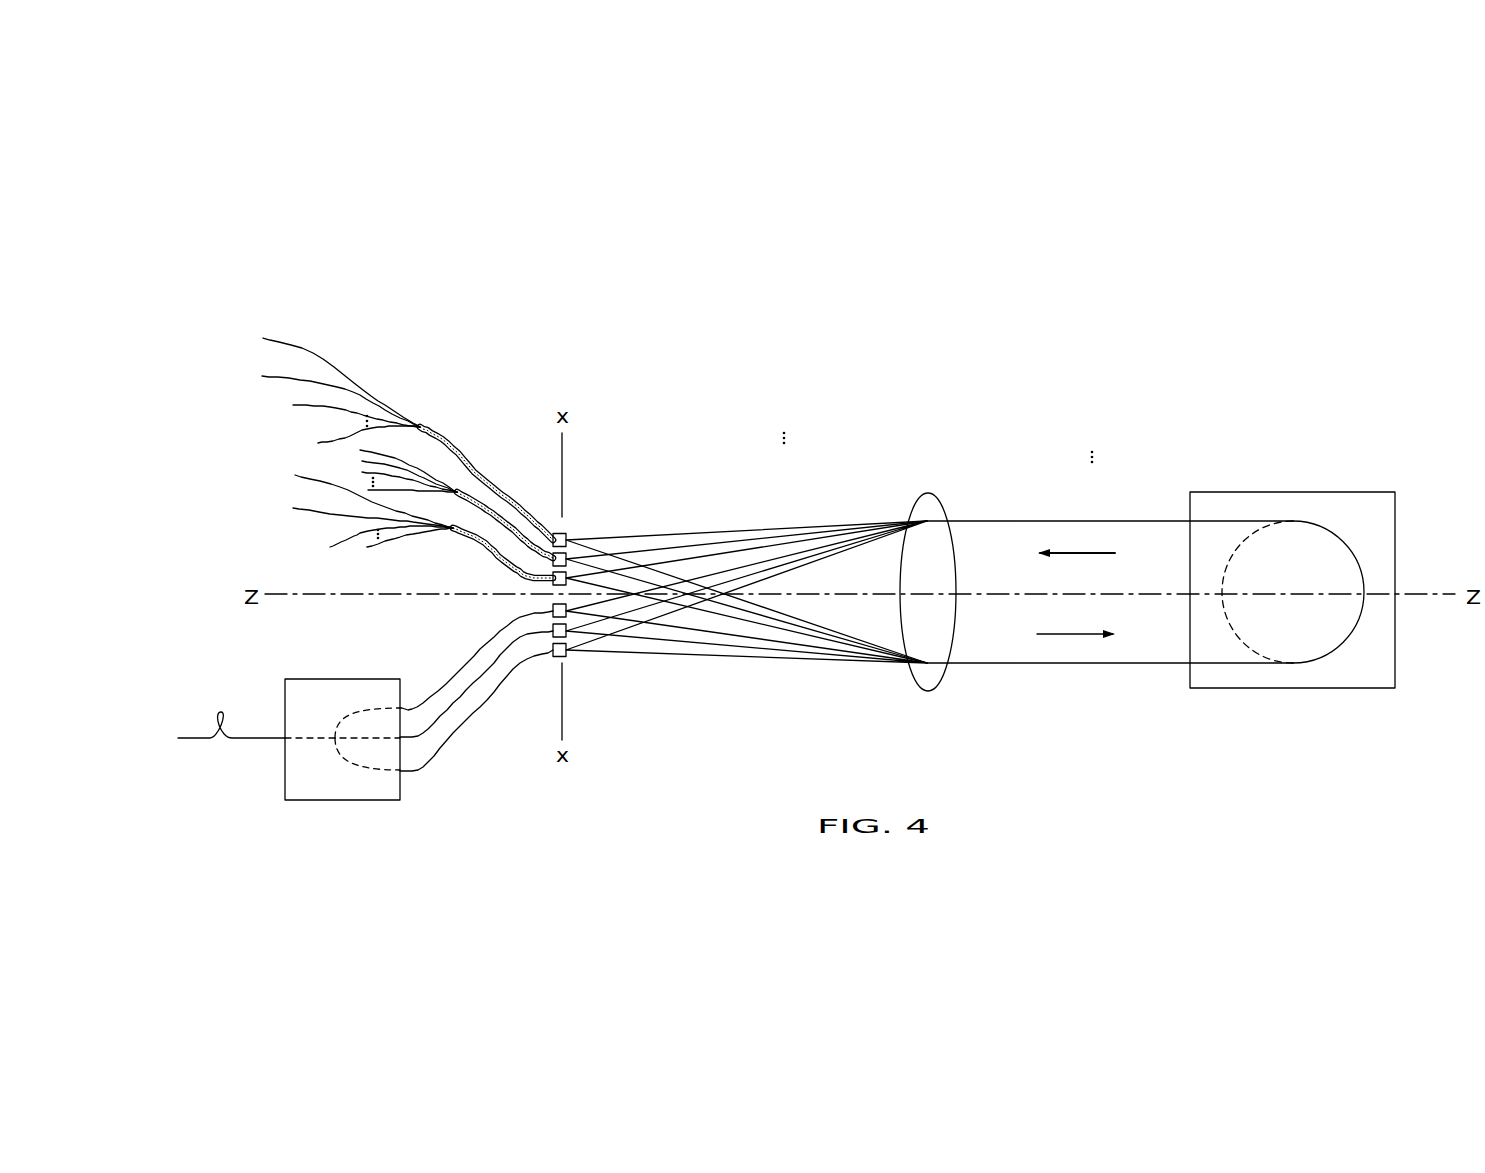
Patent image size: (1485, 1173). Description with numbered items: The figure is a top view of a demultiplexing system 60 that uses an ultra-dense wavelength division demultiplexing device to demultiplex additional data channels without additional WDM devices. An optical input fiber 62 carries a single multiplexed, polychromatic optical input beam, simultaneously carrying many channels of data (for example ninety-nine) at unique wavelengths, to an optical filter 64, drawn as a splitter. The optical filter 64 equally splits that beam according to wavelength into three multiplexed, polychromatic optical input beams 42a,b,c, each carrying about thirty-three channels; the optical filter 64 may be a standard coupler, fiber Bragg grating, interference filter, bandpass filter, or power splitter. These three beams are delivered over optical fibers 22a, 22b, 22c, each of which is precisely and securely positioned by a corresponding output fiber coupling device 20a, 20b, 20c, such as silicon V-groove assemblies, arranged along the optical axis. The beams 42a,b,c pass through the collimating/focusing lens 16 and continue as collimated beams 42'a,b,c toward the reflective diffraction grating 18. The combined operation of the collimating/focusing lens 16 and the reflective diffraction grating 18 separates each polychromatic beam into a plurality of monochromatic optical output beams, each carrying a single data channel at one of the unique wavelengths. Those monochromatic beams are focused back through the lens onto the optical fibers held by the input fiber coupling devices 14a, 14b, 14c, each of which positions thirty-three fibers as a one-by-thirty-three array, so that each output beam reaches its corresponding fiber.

The input fiber coupling device 14a is at (563, 532).
The input fiber coupling device 14b is at (567, 555).
The input fiber coupling device 14c is at (568, 573).
The collimating/focusing lens 16 is at (940, 545).
The reflective diffraction grating 18 is at (1357, 508).
The output fiber coupling device 20a is at (568, 653).
The output fiber coupling device 20b is at (567, 632).
The output fiber coupling device 20c is at (568, 614).
The optical fiber 22a is at (430, 760).
The optical fiber 22b is at (453, 703).
The optical fiber 22c is at (418, 704).
The multiplexed, polychromatic optical input beams 42a,b,c is at (759, 682).
The multiplexed, polychromatic optical input beams 42'a,b,c is at (1110, 671).
The demultiplexing system 60 is at (1163, 316).
The optical input fiber 62 is at (192, 742).
The optical filter 64 is at (318, 788).